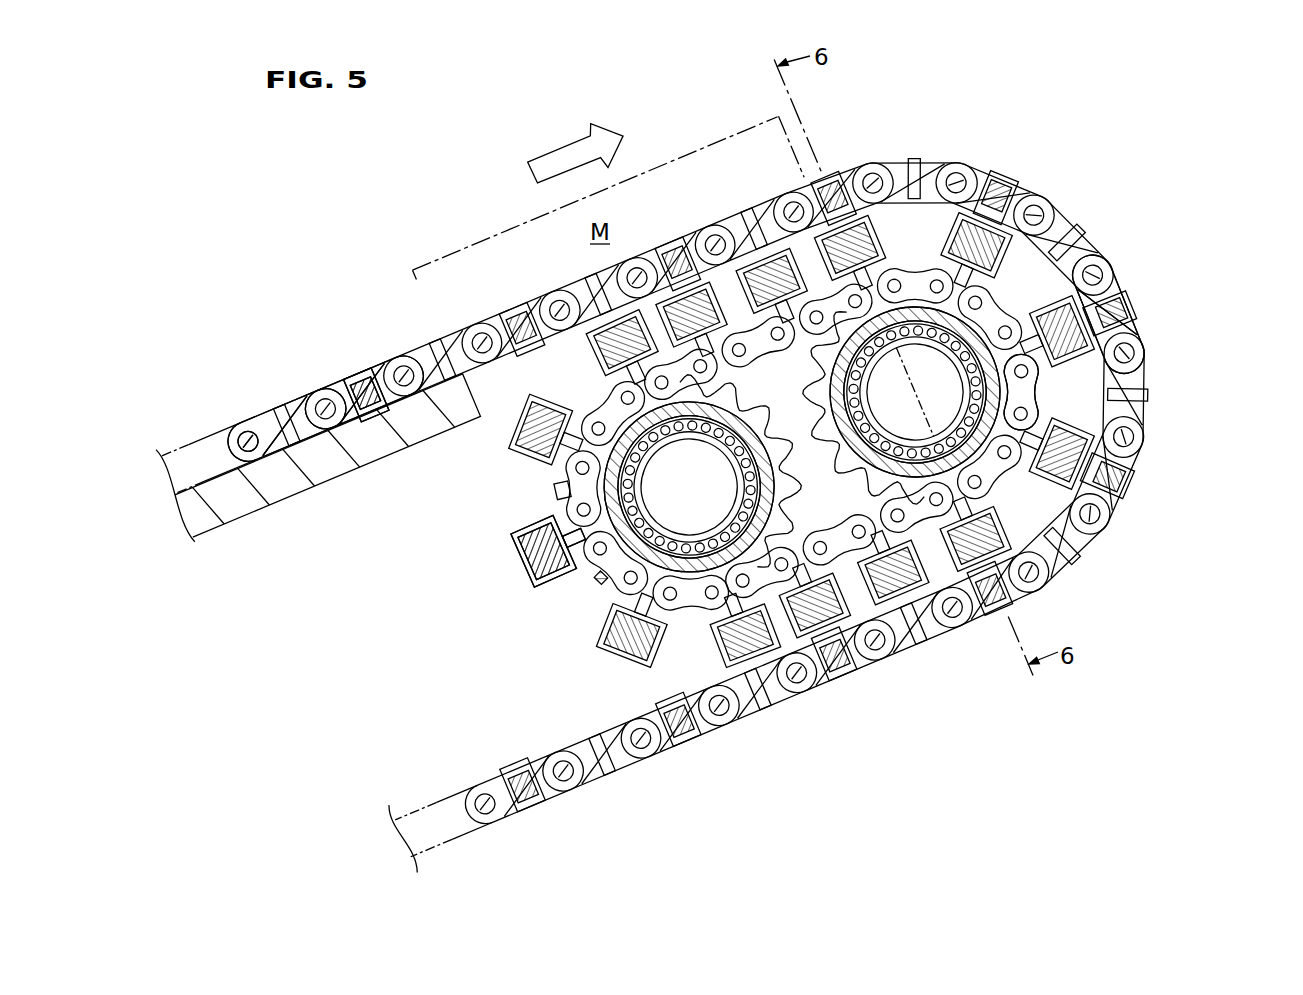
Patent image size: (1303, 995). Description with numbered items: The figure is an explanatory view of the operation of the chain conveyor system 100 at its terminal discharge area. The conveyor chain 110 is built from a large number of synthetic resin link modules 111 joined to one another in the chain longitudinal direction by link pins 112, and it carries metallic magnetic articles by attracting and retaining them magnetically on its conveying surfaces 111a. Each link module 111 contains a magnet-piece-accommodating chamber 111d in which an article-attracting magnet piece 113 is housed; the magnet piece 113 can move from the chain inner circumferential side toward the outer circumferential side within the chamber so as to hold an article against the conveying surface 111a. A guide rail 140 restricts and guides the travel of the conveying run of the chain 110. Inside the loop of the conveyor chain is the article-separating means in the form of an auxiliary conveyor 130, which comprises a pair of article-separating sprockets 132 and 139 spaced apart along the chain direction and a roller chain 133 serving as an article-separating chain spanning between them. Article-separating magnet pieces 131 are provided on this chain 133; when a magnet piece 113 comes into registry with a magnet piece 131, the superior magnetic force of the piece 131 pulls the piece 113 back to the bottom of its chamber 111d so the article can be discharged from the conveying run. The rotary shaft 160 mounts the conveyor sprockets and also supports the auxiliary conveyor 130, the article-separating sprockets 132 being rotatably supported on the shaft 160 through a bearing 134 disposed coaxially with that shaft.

The chain conveyor system 100 is at (1144, 116).
The conveyor chain 110 is at (398, 312).
The synthetic resin link module 111 is at (240, 428).
The conveying surface 111a is at (246, 415).
The magnet-piece-accommodating chamber 111d is at (340, 388).
The link pin 112 is at (398, 366).
The article-attracting magnet piece 113 is at (517, 312).
The auxiliary conveyor 130 is at (1242, 318).
The article-separating magnet piece 131 is at (1140, 333).
The article-separating sprocket 132 is at (1027, 390).
The roller chain 133 is at (990, 388).
The bearing 134 is at (985, 415).
The article-separating sprocket 139 is at (597, 583).
The guide rail 140 is at (322, 472).
The rotary shaft 160 is at (955, 394).